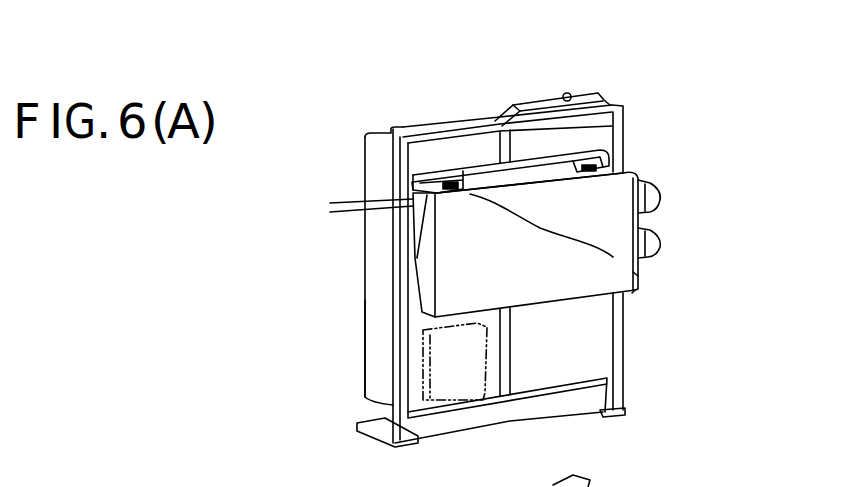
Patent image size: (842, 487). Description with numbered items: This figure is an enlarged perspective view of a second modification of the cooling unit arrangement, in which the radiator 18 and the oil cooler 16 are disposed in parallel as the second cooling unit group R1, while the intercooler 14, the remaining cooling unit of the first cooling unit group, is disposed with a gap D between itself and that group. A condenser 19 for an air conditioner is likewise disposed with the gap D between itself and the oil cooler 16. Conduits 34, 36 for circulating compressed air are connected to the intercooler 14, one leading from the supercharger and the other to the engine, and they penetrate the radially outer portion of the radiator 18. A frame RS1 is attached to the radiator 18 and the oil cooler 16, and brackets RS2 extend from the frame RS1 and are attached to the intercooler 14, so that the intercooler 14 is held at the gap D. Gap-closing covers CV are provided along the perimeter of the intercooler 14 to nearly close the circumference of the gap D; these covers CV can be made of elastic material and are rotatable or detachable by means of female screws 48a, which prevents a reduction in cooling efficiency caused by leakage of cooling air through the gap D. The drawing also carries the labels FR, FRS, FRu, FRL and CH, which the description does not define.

The frame FR is at (508, 244).
The frame side member FRS is at (403, 292).
The frame upper member FRu is at (447, 132).
The frame lower member FRL is at (603, 397).
The radiator 18 is at (530, 98).
The second cooling unit group R1 is at (453, 107).
The frame RS1 is at (427, 175).
The brackets RS2 is at (412, 182).
The gap D is at (348, 214).
The intercooler 14 is at (567, 282).
The gap-closing cover CV is at (538, 177).
The female screws 48a is at (598, 172).
The conduit 34 is at (660, 193).
The conduit 36 is at (660, 241).
The condenser 19 is at (442, 385).
The oil cooler 16 is at (417, 355).
The chassis CH is at (603, 481).